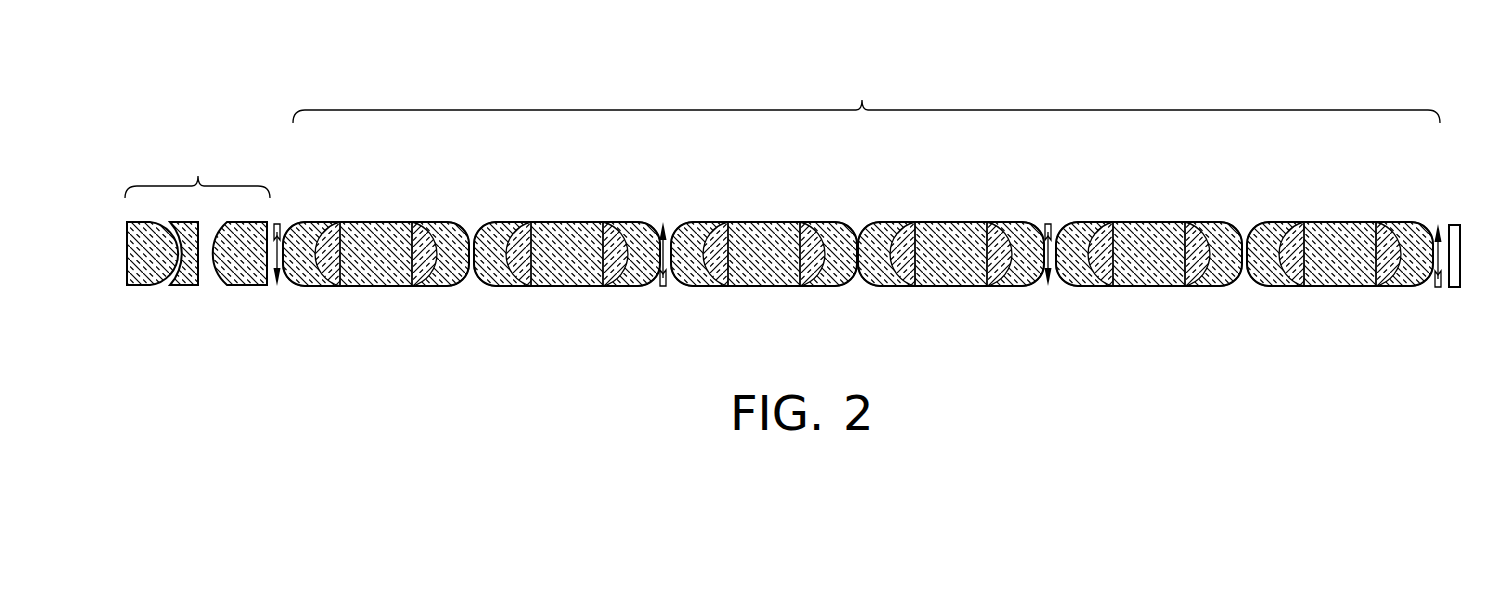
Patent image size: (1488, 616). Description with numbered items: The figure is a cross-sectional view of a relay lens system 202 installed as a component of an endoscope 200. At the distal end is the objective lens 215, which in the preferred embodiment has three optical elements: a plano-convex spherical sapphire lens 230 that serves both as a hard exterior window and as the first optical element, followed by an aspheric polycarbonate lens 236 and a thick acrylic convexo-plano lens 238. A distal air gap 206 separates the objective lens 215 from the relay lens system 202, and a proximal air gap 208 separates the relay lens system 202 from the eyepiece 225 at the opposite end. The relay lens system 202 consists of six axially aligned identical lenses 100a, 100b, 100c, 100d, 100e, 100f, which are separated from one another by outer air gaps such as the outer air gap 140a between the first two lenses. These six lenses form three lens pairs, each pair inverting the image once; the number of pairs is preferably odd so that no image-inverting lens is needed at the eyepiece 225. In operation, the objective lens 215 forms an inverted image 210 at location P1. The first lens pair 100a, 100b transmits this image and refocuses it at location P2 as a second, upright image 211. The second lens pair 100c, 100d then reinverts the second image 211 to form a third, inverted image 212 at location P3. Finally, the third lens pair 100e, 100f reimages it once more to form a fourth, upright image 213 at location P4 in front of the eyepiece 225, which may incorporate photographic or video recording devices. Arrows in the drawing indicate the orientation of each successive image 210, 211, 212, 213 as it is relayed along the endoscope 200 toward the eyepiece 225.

The endoscope 200 is at (698, 70).
The relay lens system 202 is at (866, 95).
The objective lens 215 is at (205, 155).
The plano-convex spherical sapphire lens 230 is at (132, 287).
The aspheric polycarbonate lens 236 is at (198, 287).
The thick acrylic convexo-plano lens 238 is at (236, 287).
The distal air gap 206 is at (273, 287).
The proximal air gap 208 is at (1438, 289).
The inverted image 210 is at (278, 221).
The second upright image 211 is at (664, 221).
The third inverted image 212 is at (1049, 221).
The fourth upright image 213 is at (1438, 224).
The eyepiece 225 is at (1451, 223).
The first relay lens 100a is at (370, 287).
The second relay lens 100b is at (560, 287).
The third relay lens 100c is at (750, 287).
The fourth relay lens 100d is at (933, 287).
The fifth relay lens 100e is at (1140, 287).
The sixth relay lens 100f is at (1327, 287).
The outer air gap 140a is at (477, 286).
The first image location P1 is at (292, 287).
The second image location P2 is at (653, 287).
The third image location P3 is at (1033, 287).
The fourth image location P4 is at (1425, 288).